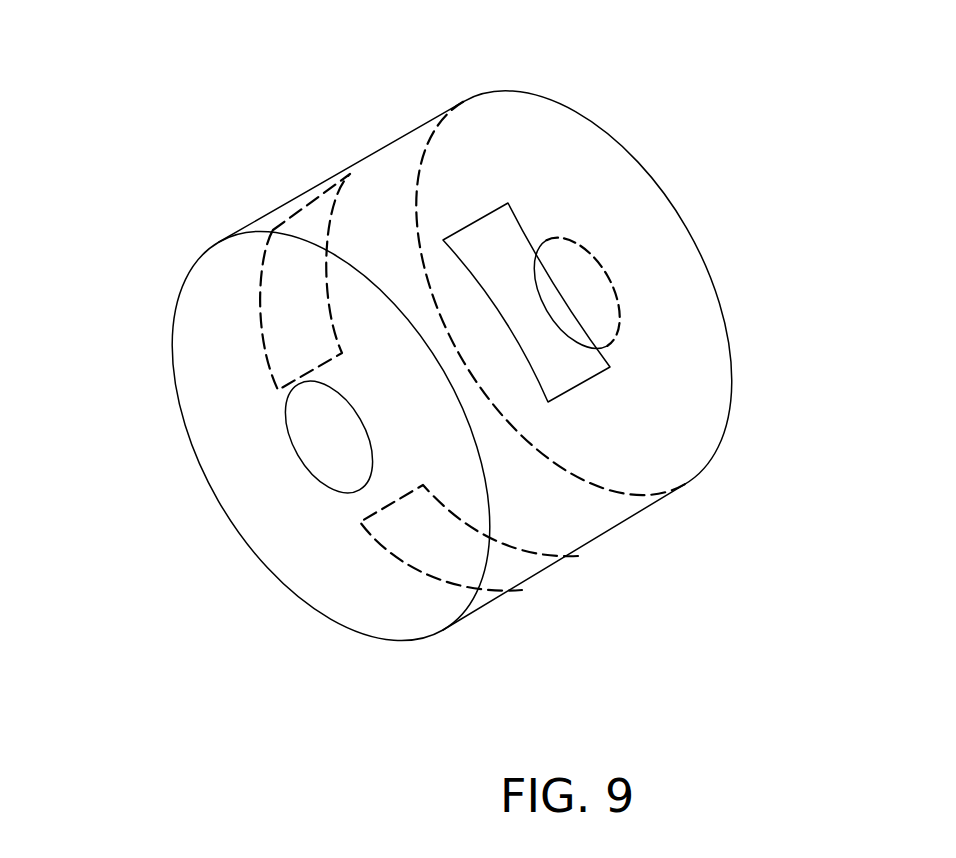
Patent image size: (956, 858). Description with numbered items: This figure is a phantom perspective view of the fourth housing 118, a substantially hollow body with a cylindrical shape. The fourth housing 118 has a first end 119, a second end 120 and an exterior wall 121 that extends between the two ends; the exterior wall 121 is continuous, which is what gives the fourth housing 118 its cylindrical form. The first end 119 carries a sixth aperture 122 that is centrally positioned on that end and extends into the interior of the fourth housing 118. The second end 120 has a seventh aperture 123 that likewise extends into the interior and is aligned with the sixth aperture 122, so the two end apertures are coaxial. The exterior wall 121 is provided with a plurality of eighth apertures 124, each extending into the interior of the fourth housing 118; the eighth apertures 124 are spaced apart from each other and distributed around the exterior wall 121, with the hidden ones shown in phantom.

The fourth housing 118 is at (246, 226).
The first end 119 is at (187, 386).
The second end 120 is at (641, 180).
The exterior wall 121 is at (408, 148).
The sixth aperture 122 is at (322, 455).
The seventh aperture 123 is at (605, 288).
The eighth apertures 124 is at (327, 224).